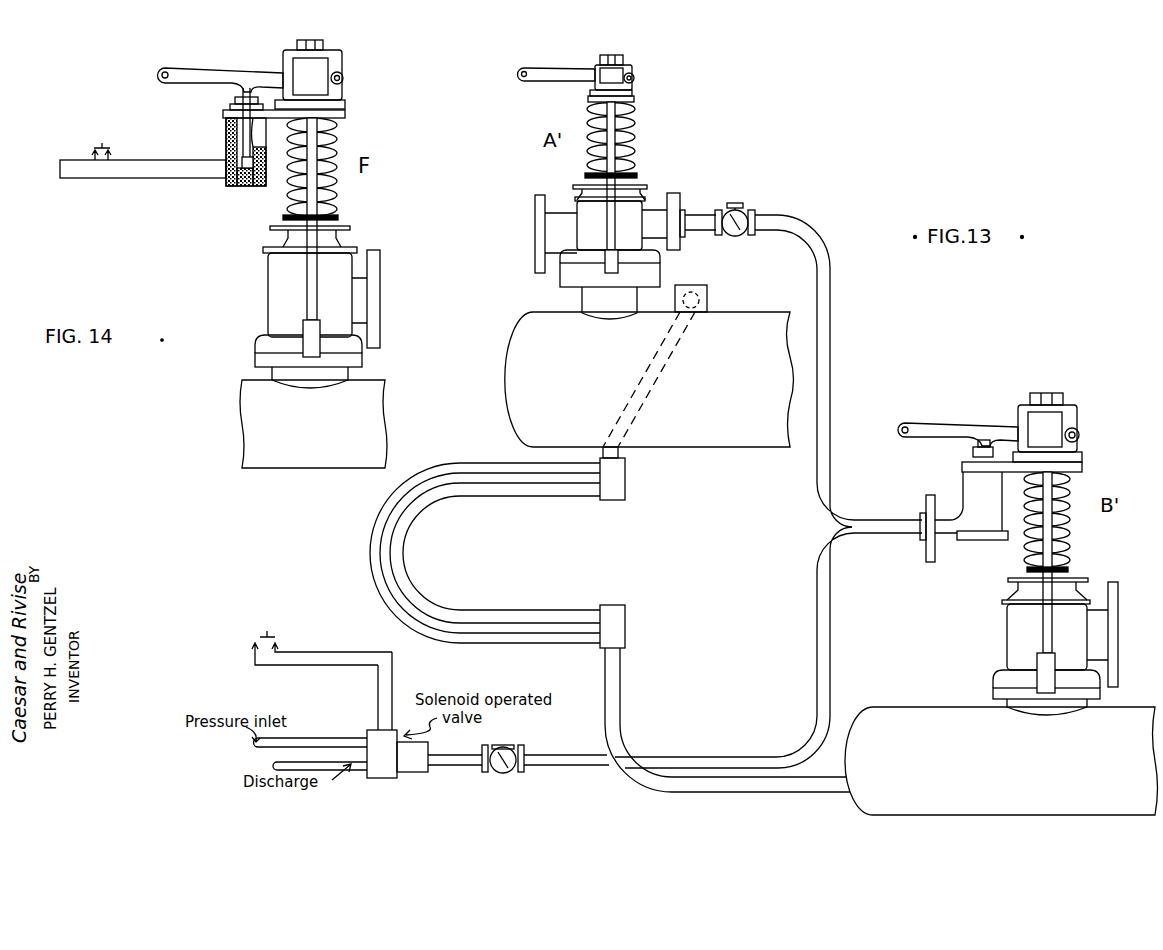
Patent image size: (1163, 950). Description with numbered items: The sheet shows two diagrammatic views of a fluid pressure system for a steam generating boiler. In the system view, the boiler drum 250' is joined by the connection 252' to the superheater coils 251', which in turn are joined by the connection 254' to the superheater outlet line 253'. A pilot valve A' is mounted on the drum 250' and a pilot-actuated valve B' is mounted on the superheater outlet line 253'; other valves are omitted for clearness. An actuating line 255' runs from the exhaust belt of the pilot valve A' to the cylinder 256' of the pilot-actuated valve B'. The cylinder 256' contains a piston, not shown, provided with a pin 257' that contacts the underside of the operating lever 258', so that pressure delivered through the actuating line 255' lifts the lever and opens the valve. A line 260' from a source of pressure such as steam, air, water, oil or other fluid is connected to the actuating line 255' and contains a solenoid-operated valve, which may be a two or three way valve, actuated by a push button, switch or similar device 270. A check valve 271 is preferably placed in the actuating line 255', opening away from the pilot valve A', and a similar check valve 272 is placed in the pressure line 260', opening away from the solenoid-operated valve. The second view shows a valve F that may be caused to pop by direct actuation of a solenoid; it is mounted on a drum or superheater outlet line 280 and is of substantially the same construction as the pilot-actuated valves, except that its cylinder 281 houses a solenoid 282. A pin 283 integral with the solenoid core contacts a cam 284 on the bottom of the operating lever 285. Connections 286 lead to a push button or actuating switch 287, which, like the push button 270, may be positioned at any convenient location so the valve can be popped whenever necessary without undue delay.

In FIG. 13, the drum 250' is at (649, 396).
In FIG. 13, the superheater coils 251' is at (468, 553).
In FIG. 13, the connection between drum and superheater coils 252' is at (655, 366).
In FIG. 13, the superheater outlet line 253' is at (1001, 751).
In FIG. 13, the connection between superheater and superheater outlet line 254' is at (727, 720).
In FIG. 13, the actuating line 255' is at (849, 371).
In FIG. 13, the cylinder 256' is at (959, 505).
In FIG. 13, the pin 257' is at (955, 453).
In FIG. 13, the operating lever 258' is at (958, 423).
In FIG. 13, the line from source of pressure 260' is at (768, 647).
In FIG. 13, the push button 270 is at (279, 643).
In FIG. 13, the check valve 271 is at (748, 208).
In FIG. 13, the check valve 272 is at (497, 776).
In FIG. 14, the drum or superheater outlet line 280 is at (292, 455).
In FIG. 14, the cylinder 281 is at (227, 150).
In FIG. 14, the solenoid 282 is at (246, 170).
In FIG. 14, the pin 283 is at (236, 93).
In FIG. 14, the cam 284 is at (247, 92).
In FIG. 14, the operating lever 285 is at (215, 62).
In FIG. 14, the connections 286 is at (156, 162).
In FIG. 14, the push button or actuating switch 287 is at (122, 138).